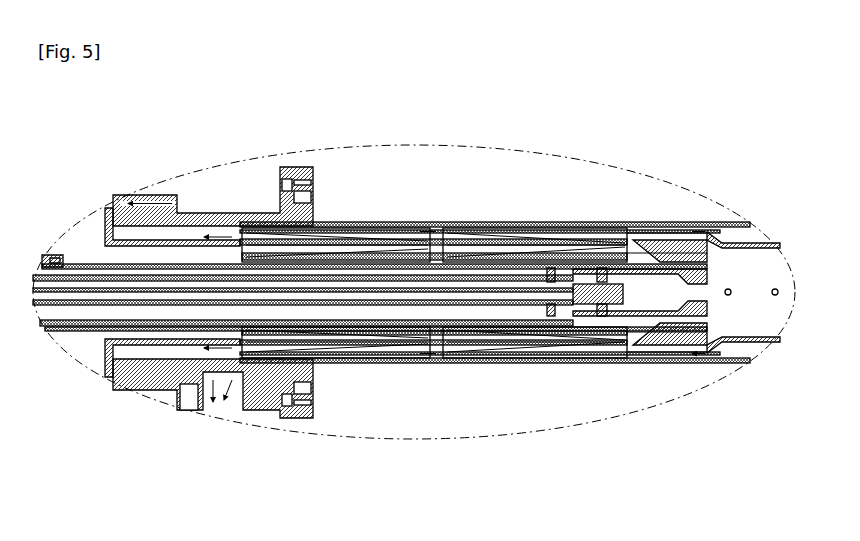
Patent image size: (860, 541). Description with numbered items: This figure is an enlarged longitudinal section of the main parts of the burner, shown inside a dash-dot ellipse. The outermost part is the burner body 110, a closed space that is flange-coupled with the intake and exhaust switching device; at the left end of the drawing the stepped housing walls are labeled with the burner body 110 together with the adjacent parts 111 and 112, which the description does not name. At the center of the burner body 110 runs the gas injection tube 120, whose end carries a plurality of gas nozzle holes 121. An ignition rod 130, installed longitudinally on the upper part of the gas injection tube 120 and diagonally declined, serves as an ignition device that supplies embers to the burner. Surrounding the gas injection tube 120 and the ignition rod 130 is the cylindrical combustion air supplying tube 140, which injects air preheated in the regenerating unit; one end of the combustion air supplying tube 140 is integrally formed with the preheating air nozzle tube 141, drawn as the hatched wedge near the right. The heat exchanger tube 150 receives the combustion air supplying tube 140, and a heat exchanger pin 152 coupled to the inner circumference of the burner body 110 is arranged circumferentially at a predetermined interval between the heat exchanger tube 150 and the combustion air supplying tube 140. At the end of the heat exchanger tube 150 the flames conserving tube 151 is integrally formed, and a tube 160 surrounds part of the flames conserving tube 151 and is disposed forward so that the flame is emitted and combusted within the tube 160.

The burner body 110 is at (212, 218).
The housing body 111 is at (113, 208).
The fixing member 112 is at (47, 253).
The gas injection tube 120 is at (556, 305).
The gas nozzle holes 121 is at (624, 304).
The ignition rod 130 is at (373, 278).
The combustion air supplying tube 140 is at (494, 222).
The preheating air nozzle tube 141 is at (710, 230).
The heat exchanger tube 150 is at (565, 225).
The flames conserving tube 151 is at (684, 228).
The heat exchanger pin 152 is at (448, 222).
The tube 160 is at (753, 230).